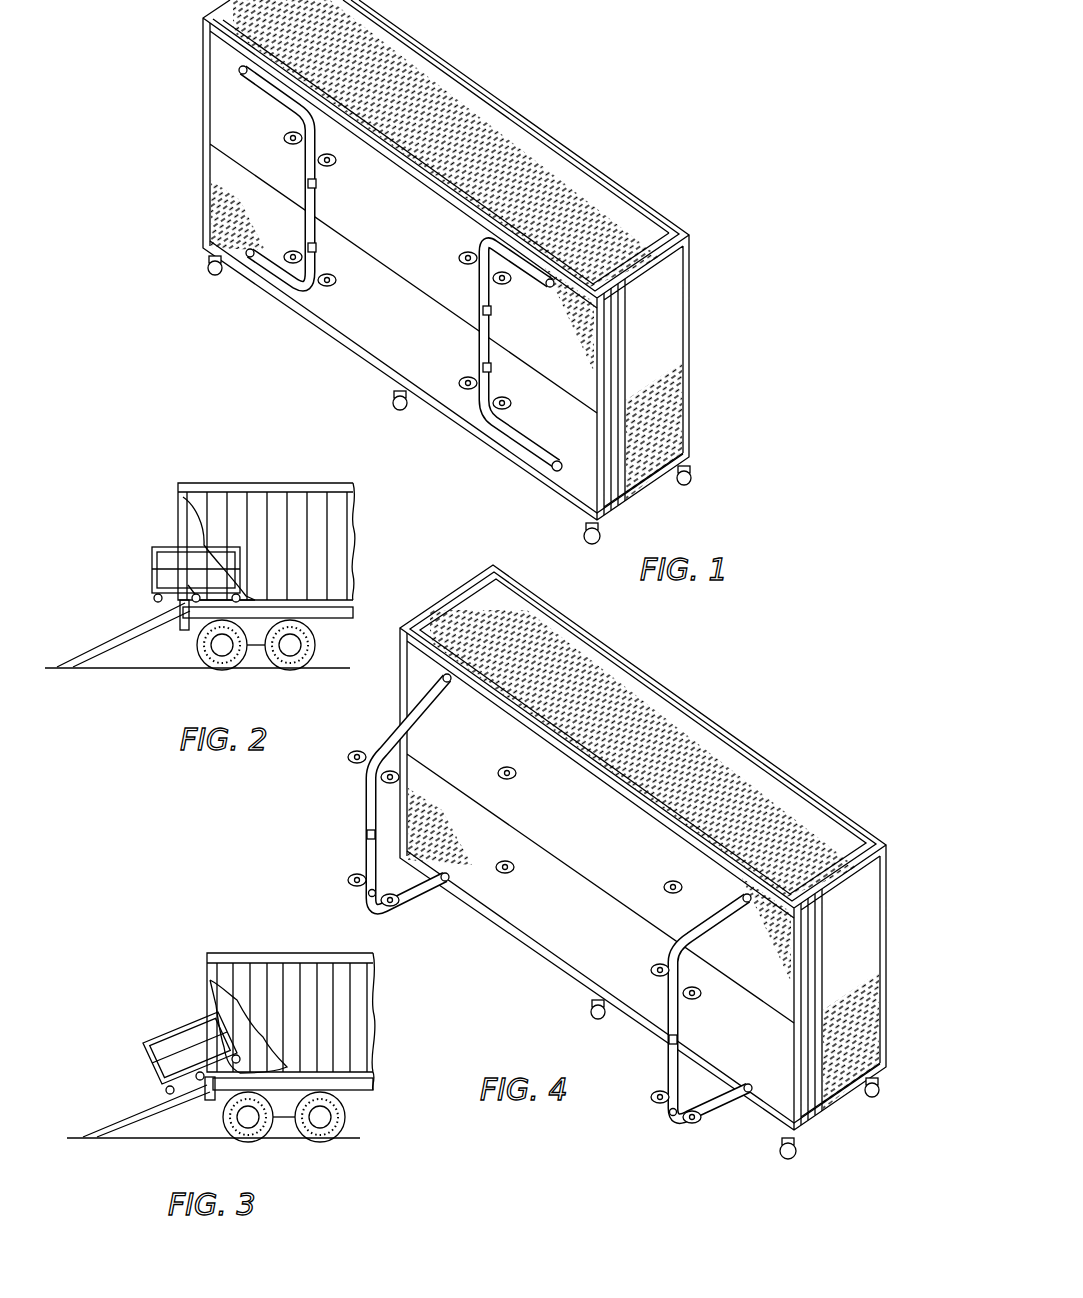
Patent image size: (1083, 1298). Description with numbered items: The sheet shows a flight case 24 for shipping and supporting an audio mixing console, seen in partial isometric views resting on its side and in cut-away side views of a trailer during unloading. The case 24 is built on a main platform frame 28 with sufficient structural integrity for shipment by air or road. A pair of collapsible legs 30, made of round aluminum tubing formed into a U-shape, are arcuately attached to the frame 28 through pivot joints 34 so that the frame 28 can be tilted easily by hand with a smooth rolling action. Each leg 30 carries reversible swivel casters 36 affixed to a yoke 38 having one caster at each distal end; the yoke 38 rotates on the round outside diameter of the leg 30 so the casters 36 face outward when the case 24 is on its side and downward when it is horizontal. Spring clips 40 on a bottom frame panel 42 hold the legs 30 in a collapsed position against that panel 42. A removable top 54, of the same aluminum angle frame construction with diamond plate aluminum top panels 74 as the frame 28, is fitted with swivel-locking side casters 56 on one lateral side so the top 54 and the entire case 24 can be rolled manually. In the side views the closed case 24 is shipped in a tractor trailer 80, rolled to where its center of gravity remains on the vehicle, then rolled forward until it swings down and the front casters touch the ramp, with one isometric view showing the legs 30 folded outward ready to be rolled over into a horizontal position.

In FIG. 1, the flight case 24 is at (557, 117).
In FIG. 2, the flight case 24 is at (152, 565).
In FIG. 3, the flight case 24 is at (158, 1035).
In FIG. 4, the flight case 24 is at (735, 715).
In FIG. 1, the main platform frame 28 is at (346, 376).
In FIG. 4, the main platform frame 28 is at (540, 950).
In FIG. 1, the collapsible legs 30 is at (264, 274).
In FIG. 4, the collapsible legs 30 is at (365, 800).
In FIG. 1, the pivot joint 34 is at (240, 70).
In FIG. 4, the pivot joint 34 is at (449, 676).
In FIG. 1, the reversible swivel casters 36 is at (286, 262).
In FIG. 4, the reversible swivel casters 36 is at (358, 752).
In FIG. 4, the yoke 38 is at (370, 895).
In FIG. 1, the spring clips 40 is at (306, 290).
In FIG. 4, the spring clips 40 is at (488, 902).
In FIG. 1, the bottom frame panel 42 is at (220, 132).
In FIG. 4, the bottom frame panel 42 is at (585, 777).
In FIG. 1, the removable top 54 is at (692, 305).
In FIG. 4, the removable top 54 is at (833, 1128).
In FIG. 1, the side casters 56 is at (210, 272).
In FIG. 4, the side casters 56 is at (598, 1020).
In FIG. 1, the diamond plate aluminum top panels 74 is at (632, 210).
In FIG. 4, the diamond plate aluminum top panels 74 is at (790, 784).
In FIG. 2, the tractor trailer 80 is at (190, 483).
In FIG. 3, the tractor trailer 80 is at (213, 953).